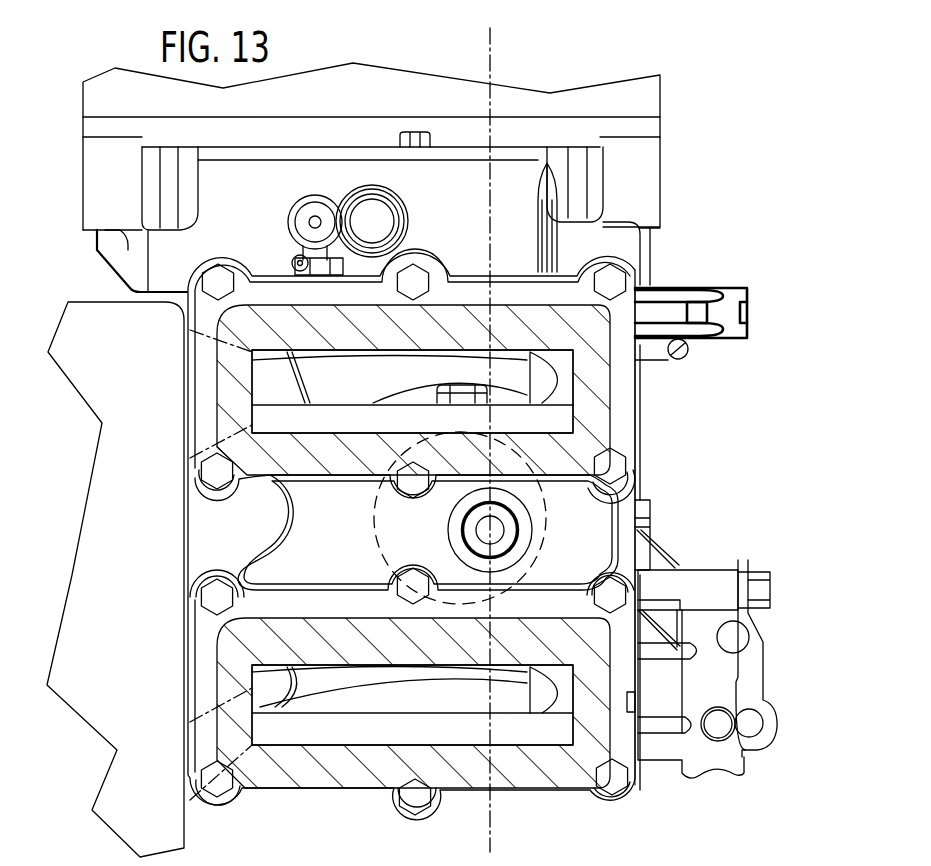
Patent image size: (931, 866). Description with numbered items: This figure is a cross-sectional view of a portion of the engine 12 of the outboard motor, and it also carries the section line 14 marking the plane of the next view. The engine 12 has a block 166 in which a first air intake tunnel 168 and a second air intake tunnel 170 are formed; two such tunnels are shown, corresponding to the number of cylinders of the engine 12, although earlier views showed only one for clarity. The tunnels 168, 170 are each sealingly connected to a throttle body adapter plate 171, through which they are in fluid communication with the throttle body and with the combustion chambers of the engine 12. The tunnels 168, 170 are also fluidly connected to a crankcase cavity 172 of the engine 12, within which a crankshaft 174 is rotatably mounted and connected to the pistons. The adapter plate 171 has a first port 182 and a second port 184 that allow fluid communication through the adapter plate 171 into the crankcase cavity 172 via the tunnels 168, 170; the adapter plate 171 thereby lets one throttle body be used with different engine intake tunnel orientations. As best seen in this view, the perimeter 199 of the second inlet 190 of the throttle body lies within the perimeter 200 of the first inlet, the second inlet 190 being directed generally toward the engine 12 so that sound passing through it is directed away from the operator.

The engine 12 is at (722, 68).
The section line 14— 14 is at (545, 42).
The block 166 is at (168, 262).
The first air intake tunnel 168 is at (612, 421).
The second air intake tunnel 170 is at (680, 570).
The throttle body adapter plate 171 is at (205, 630).
The crankcase cavity 172 is at (377, 389).
The crankshaft 174 is at (510, 397).
The first port 182 is at (323, 377).
The second port 184 is at (383, 703).
The second inlet 190 is at (440, 518).
The perimeter of second inlet 199 is at (533, 517).
The perimeter of first inlet 200 is at (374, 551).